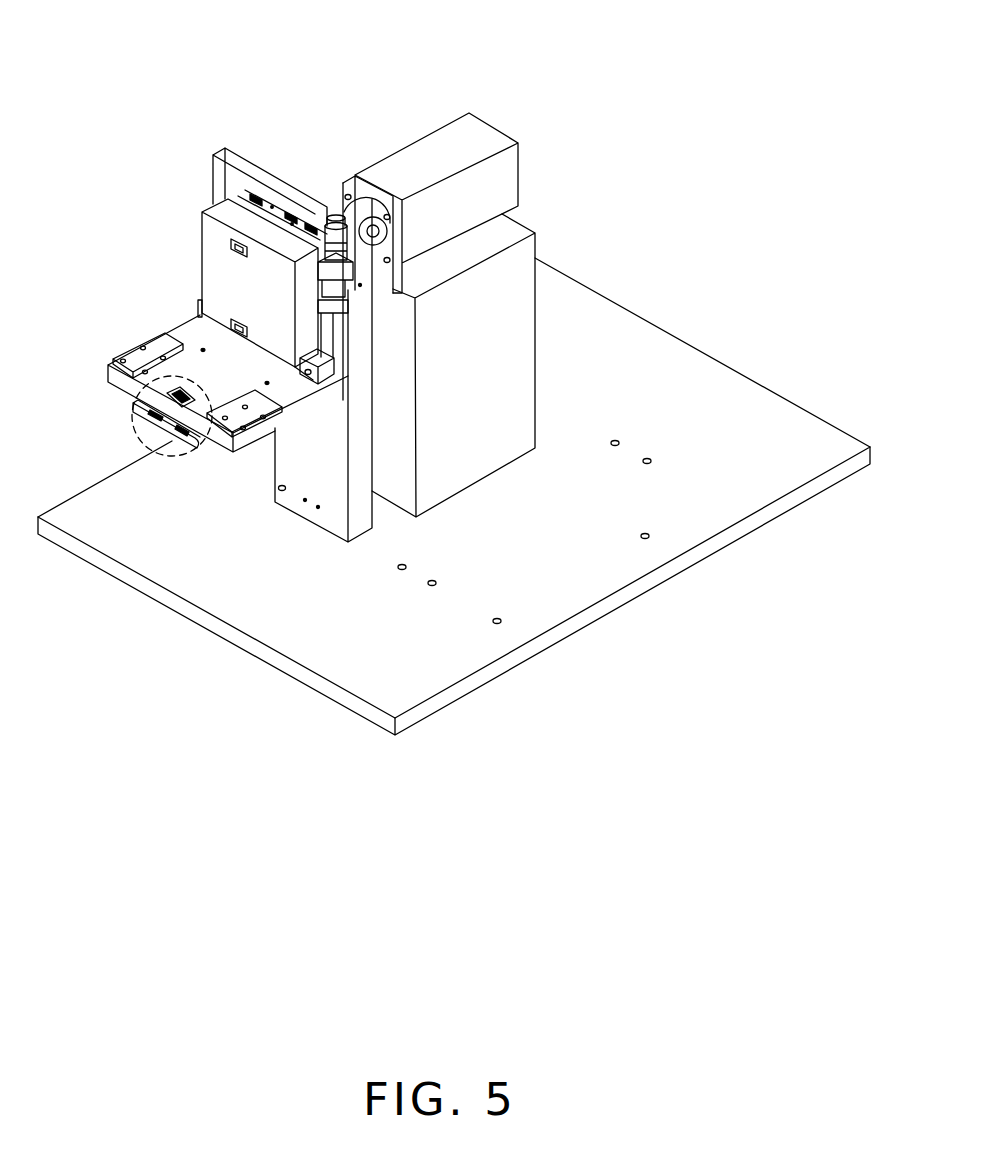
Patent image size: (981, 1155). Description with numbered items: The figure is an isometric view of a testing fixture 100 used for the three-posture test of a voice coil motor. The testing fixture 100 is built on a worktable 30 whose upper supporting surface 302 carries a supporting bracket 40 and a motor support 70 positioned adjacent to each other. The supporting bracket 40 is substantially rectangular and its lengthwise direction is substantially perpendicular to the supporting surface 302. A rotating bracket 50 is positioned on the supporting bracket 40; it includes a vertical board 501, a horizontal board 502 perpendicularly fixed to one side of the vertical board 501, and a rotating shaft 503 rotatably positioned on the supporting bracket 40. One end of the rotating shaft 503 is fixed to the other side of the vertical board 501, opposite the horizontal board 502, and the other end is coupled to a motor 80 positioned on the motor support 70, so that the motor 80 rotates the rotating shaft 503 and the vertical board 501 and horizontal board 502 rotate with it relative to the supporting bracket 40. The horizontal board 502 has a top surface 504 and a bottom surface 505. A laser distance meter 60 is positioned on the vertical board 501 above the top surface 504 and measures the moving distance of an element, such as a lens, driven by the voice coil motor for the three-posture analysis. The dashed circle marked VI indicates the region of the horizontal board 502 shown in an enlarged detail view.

The testing fixture 100 is at (134, 31).
The worktable 30 is at (454, 496).
The supporting surface 302 is at (643, 358).
The supporting bracket 40 is at (337, 520).
The rotating bracket 50 is at (93, 151).
The vertical board 501 is at (222, 185).
The horizontal board 502 is at (188, 318).
The rotating shaft 503 is at (364, 222).
The top surface 504 is at (184, 328).
The bottom surface 505 is at (111, 394).
The laser distance meter 60 is at (231, 212).
The motor support 70 is at (515, 308).
The motor 80 is at (506, 176).
The detail view marker VI is at (132, 444).